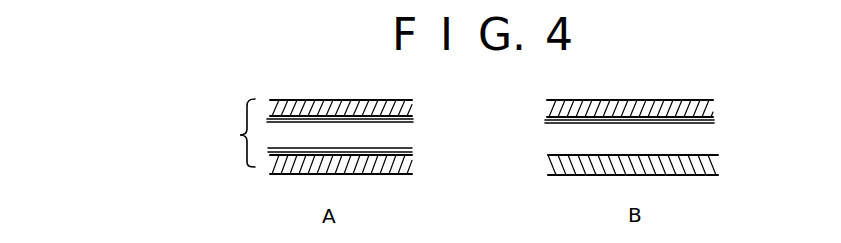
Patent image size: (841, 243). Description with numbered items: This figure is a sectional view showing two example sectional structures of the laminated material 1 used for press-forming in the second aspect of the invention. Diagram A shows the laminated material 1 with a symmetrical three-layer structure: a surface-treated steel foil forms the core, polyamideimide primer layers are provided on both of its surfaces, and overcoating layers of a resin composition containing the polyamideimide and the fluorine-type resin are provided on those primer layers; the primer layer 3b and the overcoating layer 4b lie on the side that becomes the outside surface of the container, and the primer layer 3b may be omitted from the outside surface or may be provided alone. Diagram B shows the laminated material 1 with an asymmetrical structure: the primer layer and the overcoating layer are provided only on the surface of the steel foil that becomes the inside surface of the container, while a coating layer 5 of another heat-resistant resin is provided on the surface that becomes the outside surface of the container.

The laminated material 1 is at (230, 148).
The polyamideimide primer layer 3b is at (412, 153).
The overcoating layer 4b is at (408, 163).
The coating layer 5 is at (548, 165).